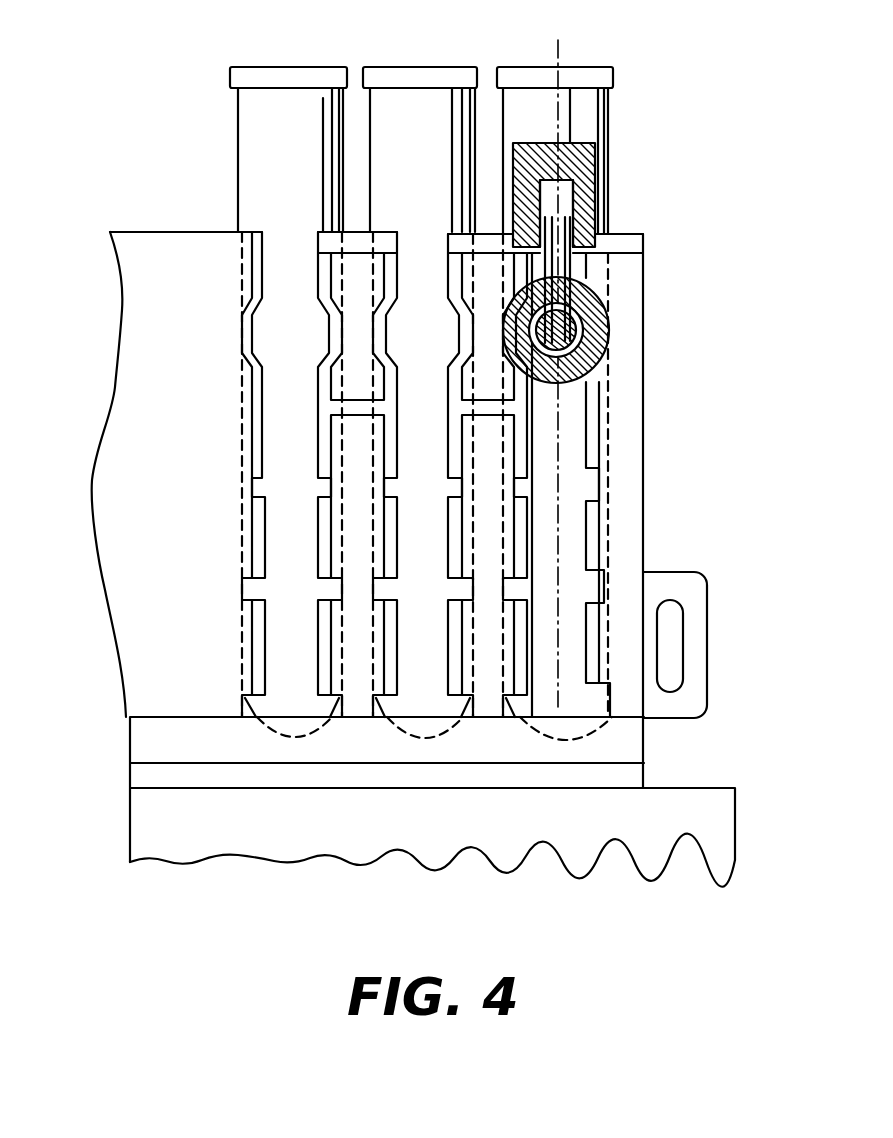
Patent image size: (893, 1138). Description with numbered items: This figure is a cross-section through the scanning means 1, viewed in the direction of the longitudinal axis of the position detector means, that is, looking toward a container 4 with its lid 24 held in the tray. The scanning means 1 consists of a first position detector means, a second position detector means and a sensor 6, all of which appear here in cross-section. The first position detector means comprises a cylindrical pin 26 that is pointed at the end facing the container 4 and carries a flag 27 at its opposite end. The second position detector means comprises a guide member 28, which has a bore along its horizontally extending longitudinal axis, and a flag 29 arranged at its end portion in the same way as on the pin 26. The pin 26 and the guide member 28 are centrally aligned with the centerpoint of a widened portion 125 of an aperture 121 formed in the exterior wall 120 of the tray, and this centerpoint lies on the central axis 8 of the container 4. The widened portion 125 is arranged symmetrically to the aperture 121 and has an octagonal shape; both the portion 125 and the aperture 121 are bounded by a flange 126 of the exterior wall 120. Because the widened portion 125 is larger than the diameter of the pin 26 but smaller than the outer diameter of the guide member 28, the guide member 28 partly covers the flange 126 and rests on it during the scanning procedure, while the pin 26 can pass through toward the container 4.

The scanning means 1 is at (615, 163).
The container 4 is at (578, 115).
The sensor 6 is at (583, 201).
The central axis 8 is at (558, 58).
The lid 24 is at (523, 76).
The cylindrical pin 26 is at (604, 352).
The flag 27 is at (565, 268).
The guide member 28 is at (588, 318).
The flag 29 is at (598, 222).
The exterior wall 120 is at (353, 293).
The aperture 121 is at (276, 404).
The widened portion 125 is at (248, 327).
The flange 126 is at (240, 368).